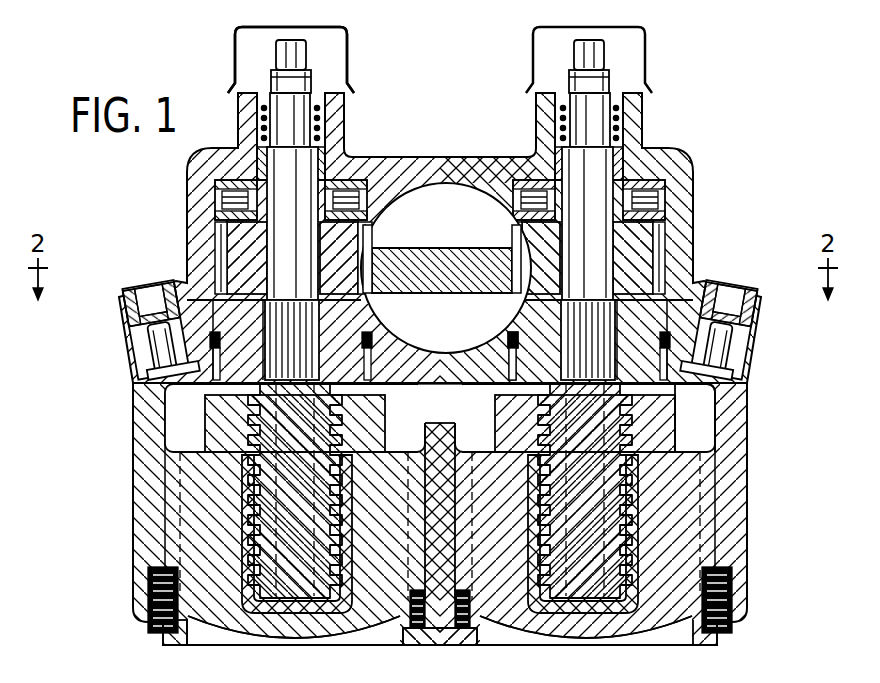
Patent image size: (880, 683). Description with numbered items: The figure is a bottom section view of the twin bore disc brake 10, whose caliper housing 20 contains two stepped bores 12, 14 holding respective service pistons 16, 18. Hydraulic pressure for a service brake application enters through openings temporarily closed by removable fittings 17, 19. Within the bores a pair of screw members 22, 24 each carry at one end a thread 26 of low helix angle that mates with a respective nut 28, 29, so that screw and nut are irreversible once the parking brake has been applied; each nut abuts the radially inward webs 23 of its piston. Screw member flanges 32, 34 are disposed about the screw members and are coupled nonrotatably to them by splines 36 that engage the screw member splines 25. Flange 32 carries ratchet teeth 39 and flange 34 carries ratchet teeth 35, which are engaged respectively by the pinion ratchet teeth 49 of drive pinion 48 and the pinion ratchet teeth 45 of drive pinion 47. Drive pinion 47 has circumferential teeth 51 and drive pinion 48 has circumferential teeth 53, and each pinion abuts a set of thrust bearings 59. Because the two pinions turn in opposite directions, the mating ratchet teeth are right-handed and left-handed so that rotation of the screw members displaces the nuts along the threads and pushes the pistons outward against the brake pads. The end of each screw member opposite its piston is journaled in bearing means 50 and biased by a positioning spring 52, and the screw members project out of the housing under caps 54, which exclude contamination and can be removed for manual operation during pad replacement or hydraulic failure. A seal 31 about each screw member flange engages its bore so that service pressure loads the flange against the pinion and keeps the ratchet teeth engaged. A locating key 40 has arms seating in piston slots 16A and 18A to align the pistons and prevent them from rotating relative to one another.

The disc brake 10 is at (182, 61).
The bore 12 is at (735, 422).
The bore 14 is at (178, 450).
The piston 16 is at (735, 542).
The piston slot 16A is at (497, 630).
The removable fitting 17 is at (742, 296).
The piston 18 is at (172, 532).
The piston slot 18A is at (388, 630).
The removable fitting 19 is at (128, 295).
The caliper housing 20 is at (690, 176).
The screw member 22 is at (592, 592).
The webs 23 is at (245, 472).
The screw member 24 is at (290, 592).
The screw member splines 25 is at (170, 377).
The thread 26 is at (248, 582).
The nut 28 is at (722, 441).
The nut 29 is at (213, 455).
The seal 31 is at (132, 333).
The screw member flange 32 is at (660, 323).
The screw member flange 34 is at (213, 300).
The ratchet teeth 35 is at (365, 303).
The splines 36 is at (155, 368).
The ratchet teeth 39 is at (520, 320).
The locating key 40 is at (453, 645).
The pinion ratchet teeth 45 is at (374, 262).
The drive pinion 47 is at (235, 238).
The drive pinion 48 is at (640, 228).
The pinion ratchet teeth 49 is at (512, 252).
The bearing means 50 is at (257, 150).
The circumferential teeth 51 is at (218, 243).
The positioning spring 52 is at (325, 132).
The circumferential teeth 53 is at (667, 236).
The cap 54 is at (347, 60).
The thrust bearings 59 is at (222, 200).